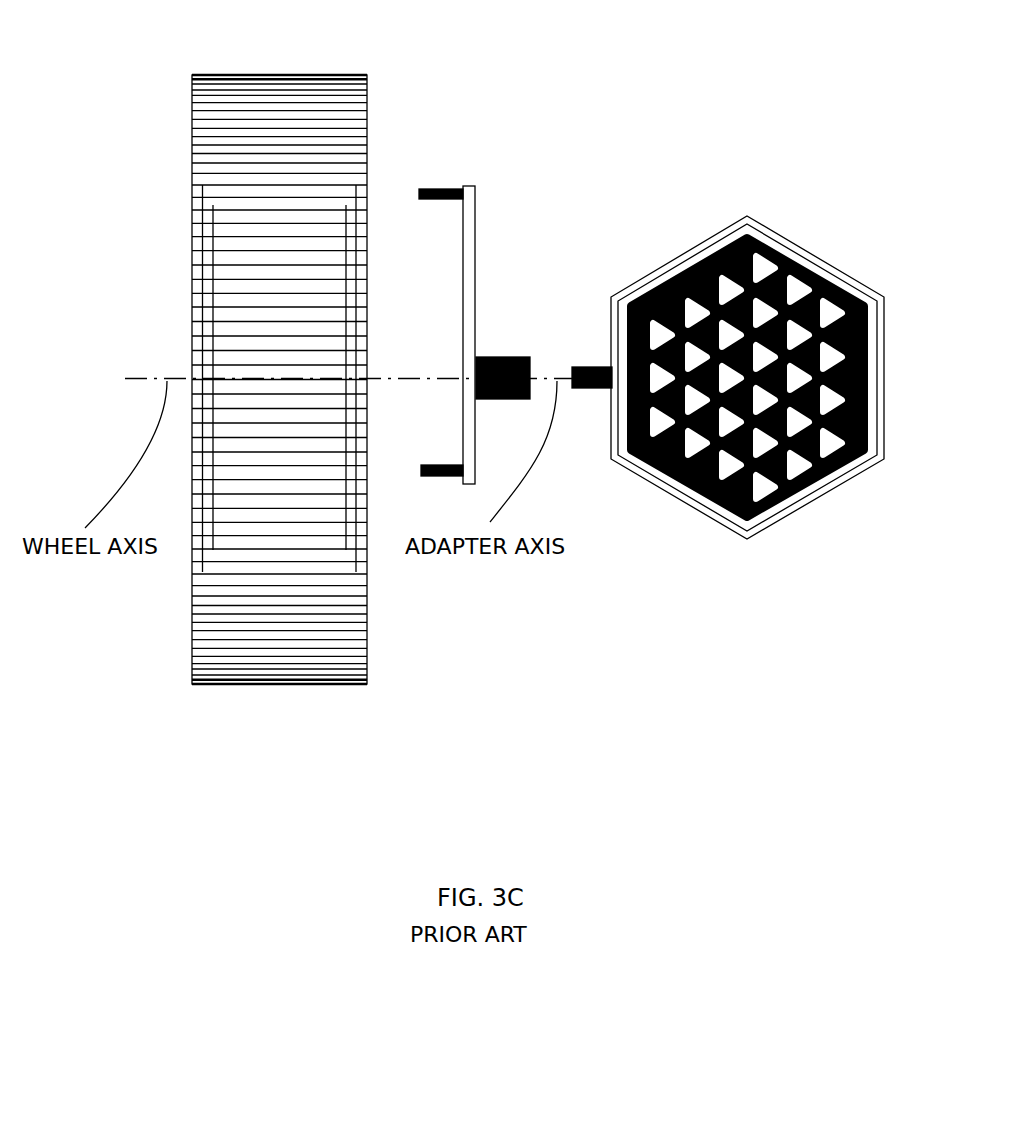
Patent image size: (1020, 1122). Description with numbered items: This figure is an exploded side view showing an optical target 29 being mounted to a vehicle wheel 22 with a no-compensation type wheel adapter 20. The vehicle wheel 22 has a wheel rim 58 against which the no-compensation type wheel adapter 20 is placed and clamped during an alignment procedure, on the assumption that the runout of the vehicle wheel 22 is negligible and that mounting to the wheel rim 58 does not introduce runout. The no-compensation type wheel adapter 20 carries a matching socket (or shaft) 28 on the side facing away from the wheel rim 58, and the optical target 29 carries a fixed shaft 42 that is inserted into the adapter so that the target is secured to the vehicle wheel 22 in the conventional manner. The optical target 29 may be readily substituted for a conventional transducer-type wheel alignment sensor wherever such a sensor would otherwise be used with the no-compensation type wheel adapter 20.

The vehicle wheel 22 is at (267, 95).
The wheel rim 58 is at (360, 215).
The no-compensation type wheel adapter 20 is at (475, 253).
The socket (or shaft) 28 is at (490, 356).
The fixed shaft 42 is at (600, 389).
The optical target 29 is at (790, 232).